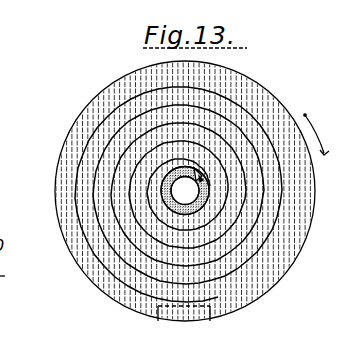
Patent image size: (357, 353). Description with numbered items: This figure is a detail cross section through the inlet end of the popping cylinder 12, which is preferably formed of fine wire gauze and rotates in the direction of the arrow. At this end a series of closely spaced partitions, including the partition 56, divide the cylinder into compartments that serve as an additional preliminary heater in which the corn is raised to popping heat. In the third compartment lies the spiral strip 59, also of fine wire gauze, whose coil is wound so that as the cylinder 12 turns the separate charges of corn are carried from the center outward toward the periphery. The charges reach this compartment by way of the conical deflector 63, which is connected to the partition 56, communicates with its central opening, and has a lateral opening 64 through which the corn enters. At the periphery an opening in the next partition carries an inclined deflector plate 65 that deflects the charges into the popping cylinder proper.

The popping chamber or cylinder 12 is at (185, 191).
The partition 56 is at (248, 99).
The spiral strip 59 is at (122, 282).
The conical deflector 63 is at (162, 191).
The lateral opening 64 is at (200, 189).
The inclined deflector plate 65 is at (173, 312).